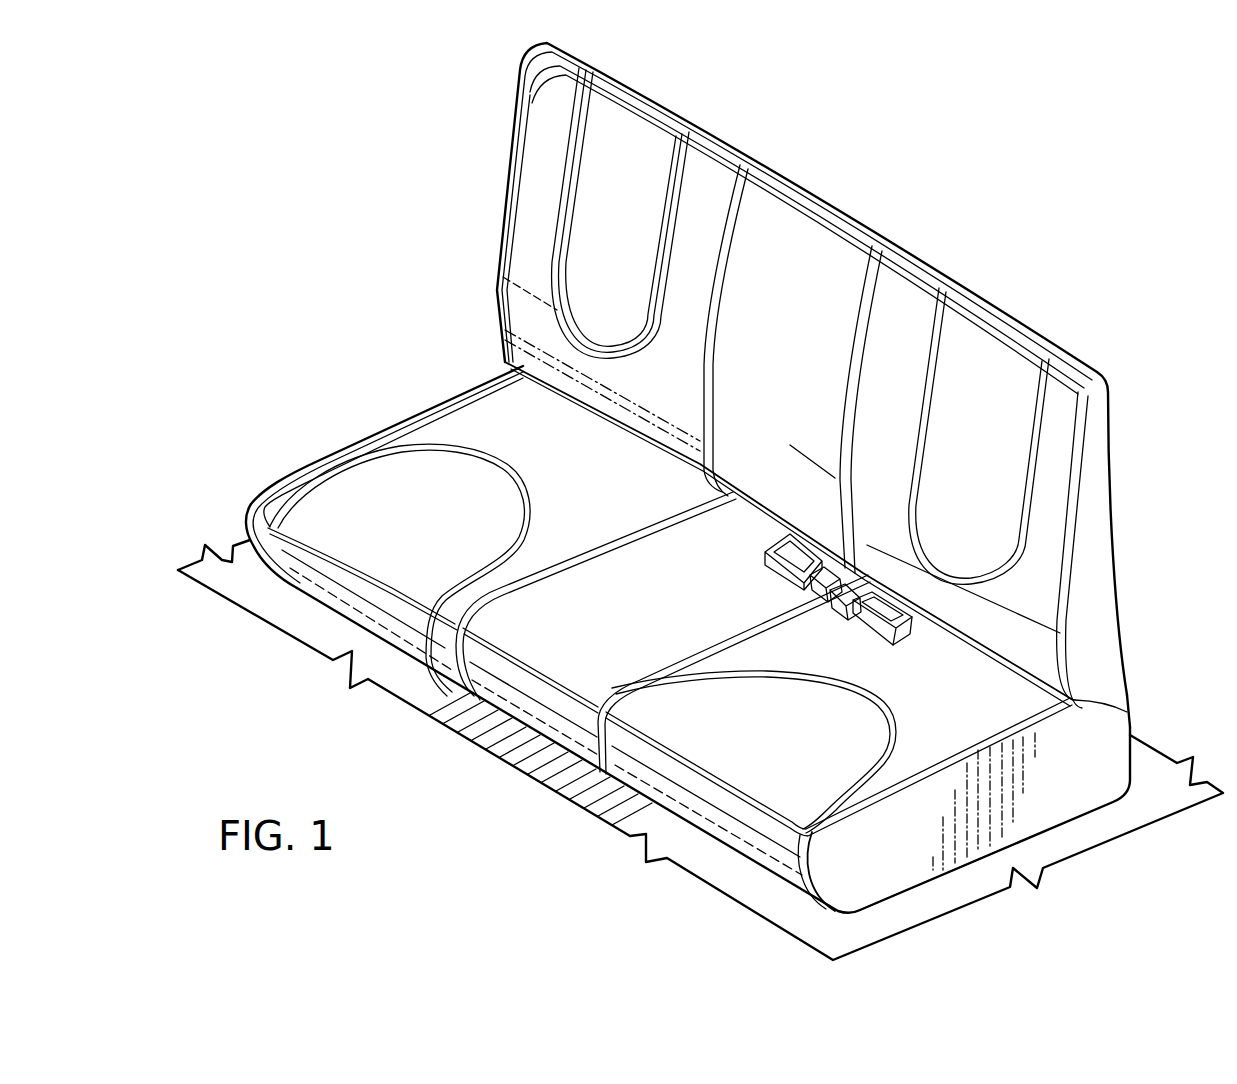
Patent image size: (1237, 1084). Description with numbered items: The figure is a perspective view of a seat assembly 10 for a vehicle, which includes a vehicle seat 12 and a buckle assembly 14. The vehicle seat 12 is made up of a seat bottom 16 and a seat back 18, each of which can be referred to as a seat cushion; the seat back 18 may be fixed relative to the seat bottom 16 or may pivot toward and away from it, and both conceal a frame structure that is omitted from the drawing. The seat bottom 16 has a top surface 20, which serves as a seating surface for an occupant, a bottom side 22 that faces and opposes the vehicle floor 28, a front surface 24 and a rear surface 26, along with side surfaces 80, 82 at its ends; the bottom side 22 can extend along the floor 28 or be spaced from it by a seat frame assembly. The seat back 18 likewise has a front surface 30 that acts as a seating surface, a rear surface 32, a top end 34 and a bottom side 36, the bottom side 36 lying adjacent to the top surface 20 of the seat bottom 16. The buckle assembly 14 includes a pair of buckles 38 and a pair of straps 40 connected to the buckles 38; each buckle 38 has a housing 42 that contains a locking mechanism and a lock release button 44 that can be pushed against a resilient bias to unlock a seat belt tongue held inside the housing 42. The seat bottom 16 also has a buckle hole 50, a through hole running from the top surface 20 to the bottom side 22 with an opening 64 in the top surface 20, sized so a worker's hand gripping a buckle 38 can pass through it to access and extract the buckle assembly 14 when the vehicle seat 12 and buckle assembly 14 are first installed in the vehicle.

The seat assembly 10 is at (841, 189).
The vehicle seat 12 is at (370, 404).
The buckle assembly 14 is at (948, 650).
The seat bottom 16 is at (447, 420).
The seat back 18 is at (533, 185).
The top surface 20 is at (631, 617).
The bottom side 22 is at (1071, 821).
The front surface 24 is at (520, 705).
The rear surface 26 is at (1132, 728).
The floor 28 is at (751, 888).
The front surface 30 is at (797, 358).
The rear surface 32 is at (1112, 502).
The top end 34 is at (873, 243).
The bottom side 36 is at (1122, 703).
The buckle 38 is at (766, 554).
The strap 40 is at (816, 612).
The housing 42 is at (870, 632).
The lock release button 44 is at (906, 634).
The buckle hole 50 is at (772, 595).
The opening 64 is at (845, 602).
The side surface 80 is at (944, 846).
The side surface 82 is at (312, 455).